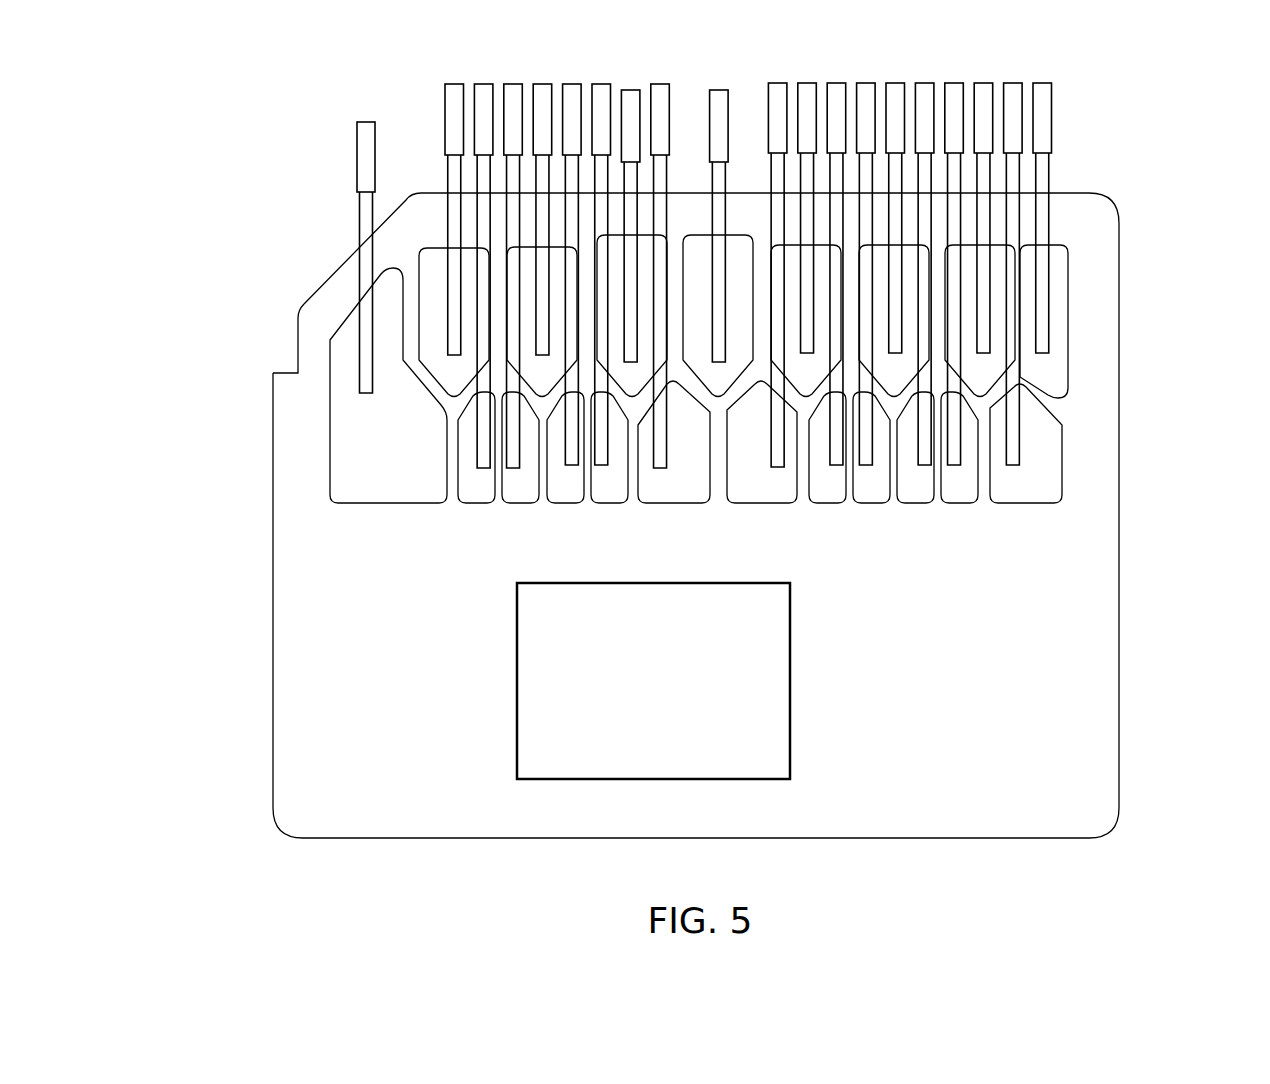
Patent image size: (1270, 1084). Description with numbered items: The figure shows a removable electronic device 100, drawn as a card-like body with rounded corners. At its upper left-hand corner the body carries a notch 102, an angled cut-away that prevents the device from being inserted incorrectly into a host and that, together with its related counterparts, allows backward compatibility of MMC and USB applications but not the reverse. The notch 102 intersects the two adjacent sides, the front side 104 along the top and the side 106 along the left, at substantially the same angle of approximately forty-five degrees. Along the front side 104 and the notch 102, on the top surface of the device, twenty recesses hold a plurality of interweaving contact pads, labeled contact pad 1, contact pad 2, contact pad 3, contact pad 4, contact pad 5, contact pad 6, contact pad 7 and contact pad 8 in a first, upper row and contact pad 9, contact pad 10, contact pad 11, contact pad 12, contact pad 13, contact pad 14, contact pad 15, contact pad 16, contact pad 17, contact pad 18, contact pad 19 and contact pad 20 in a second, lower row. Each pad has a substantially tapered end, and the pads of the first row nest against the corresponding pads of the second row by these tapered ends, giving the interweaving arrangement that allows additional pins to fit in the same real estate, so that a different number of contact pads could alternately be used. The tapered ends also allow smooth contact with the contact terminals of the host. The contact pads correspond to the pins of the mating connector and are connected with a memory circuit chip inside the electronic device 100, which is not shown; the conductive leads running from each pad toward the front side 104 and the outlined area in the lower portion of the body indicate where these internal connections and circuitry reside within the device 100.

The removable electronic device 100 is at (1128, 192).
The notch 102 is at (272, 240).
The front side 104 is at (430, 195).
The adjacent side 106 is at (271, 478).
The contact pad 1 is at (454, 322).
The contact pad 2 is at (542, 322).
The contact pad 3 is at (632, 316).
The contact pad 4 is at (718, 316).
The contact pad 5 is at (806, 321).
The contact pad 6 is at (894, 321).
The contact pad 7 is at (980, 321).
The contact pad 8 is at (1044, 321).
The contact pad 9 is at (388, 385).
The contact pad 10 is at (476, 447).
The contact pad 11 is at (520, 447).
The contact pad 12 is at (565, 447).
The contact pad 13 is at (609, 447).
The contact pad 14 is at (674, 442).
The contact pad 15 is at (762, 442).
The contact pad 16 is at (827, 447).
The contact pad 17 is at (871, 447).
The contact pad 18 is at (915, 447).
The contact pad 19 is at (959, 447).
The contact pad 20 is at (1026, 443).